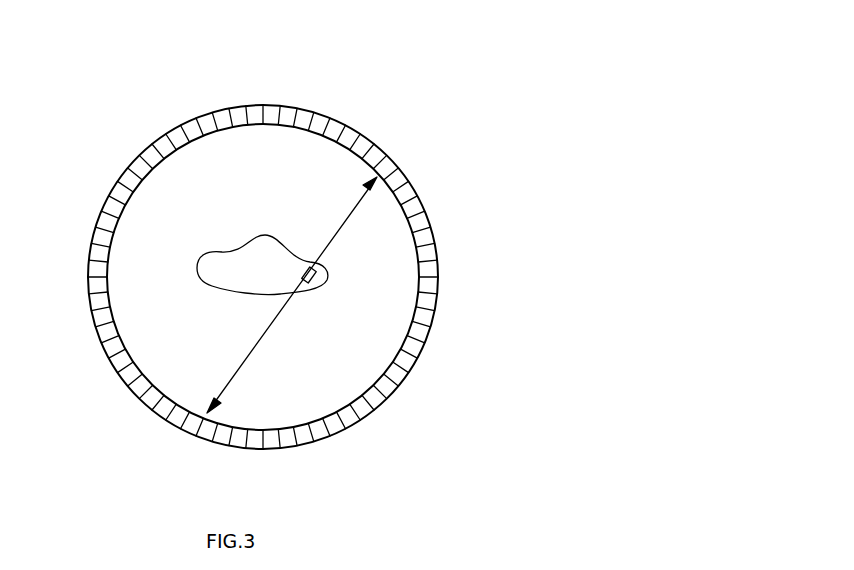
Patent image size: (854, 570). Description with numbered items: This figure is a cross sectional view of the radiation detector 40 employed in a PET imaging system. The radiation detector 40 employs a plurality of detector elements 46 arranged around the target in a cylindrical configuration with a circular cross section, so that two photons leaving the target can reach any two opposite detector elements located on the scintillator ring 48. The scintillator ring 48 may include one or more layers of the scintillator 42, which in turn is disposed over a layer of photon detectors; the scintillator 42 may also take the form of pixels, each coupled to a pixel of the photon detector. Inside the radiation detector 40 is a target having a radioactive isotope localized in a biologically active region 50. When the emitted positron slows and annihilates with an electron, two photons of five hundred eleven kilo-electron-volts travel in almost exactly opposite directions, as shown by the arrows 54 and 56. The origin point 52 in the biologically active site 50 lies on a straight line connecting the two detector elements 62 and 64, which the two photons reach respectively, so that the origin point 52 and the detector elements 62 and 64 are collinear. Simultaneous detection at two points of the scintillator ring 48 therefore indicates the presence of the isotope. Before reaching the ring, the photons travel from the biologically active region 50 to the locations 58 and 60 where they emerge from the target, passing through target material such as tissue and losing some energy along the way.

The radiation detector 40 is at (407, 56).
The scintillator 42 is at (90, 243).
The detector elements 46 is at (436, 300).
The scintillator ring 48 is at (163, 137).
The biologically active region 50 is at (308, 284).
The origin point 52 is at (320, 282).
The arrow 54 is at (242, 360).
The arrow 56 is at (352, 222).
The location 58 is at (297, 299).
The location 60 is at (321, 265).
The detector element 62 is at (193, 430).
The detector element 64 is at (390, 170).